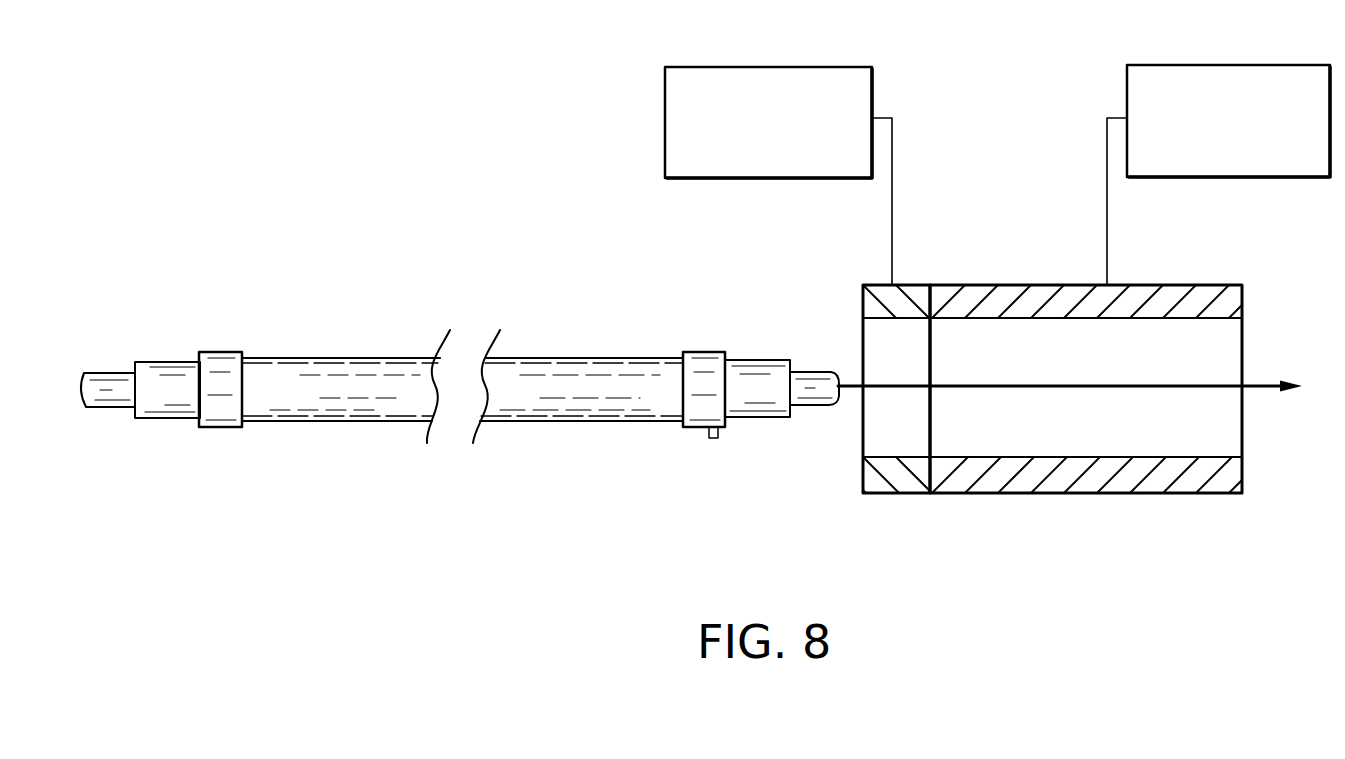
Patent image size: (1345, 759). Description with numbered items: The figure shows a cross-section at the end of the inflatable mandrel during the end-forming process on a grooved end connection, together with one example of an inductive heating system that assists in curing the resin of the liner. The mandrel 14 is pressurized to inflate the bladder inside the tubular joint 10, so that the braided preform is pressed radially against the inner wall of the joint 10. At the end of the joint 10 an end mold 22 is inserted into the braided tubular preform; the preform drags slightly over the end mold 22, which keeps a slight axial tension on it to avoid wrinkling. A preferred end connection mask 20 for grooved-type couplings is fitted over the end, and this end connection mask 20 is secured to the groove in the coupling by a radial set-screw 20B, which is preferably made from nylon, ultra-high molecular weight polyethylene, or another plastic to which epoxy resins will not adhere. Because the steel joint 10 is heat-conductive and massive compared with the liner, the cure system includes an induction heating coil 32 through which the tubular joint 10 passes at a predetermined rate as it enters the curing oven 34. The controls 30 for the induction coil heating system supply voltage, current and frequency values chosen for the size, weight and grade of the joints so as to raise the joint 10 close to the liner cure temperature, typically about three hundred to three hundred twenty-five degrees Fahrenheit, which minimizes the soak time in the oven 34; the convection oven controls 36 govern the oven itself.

The tubular joint 10 is at (560, 357).
The mandrel 14 is at (815, 372).
The end connection mask 20 is at (705, 352).
The radial set-screw 20B is at (713, 440).
The end mold 22 is at (757, 360).
The controls for the induction coil heating system 30 is at (798, 66).
The induction heating coil 32 is at (918, 284).
The curing oven 34 is at (1185, 284).
The convection oven controls 36 is at (1267, 65).